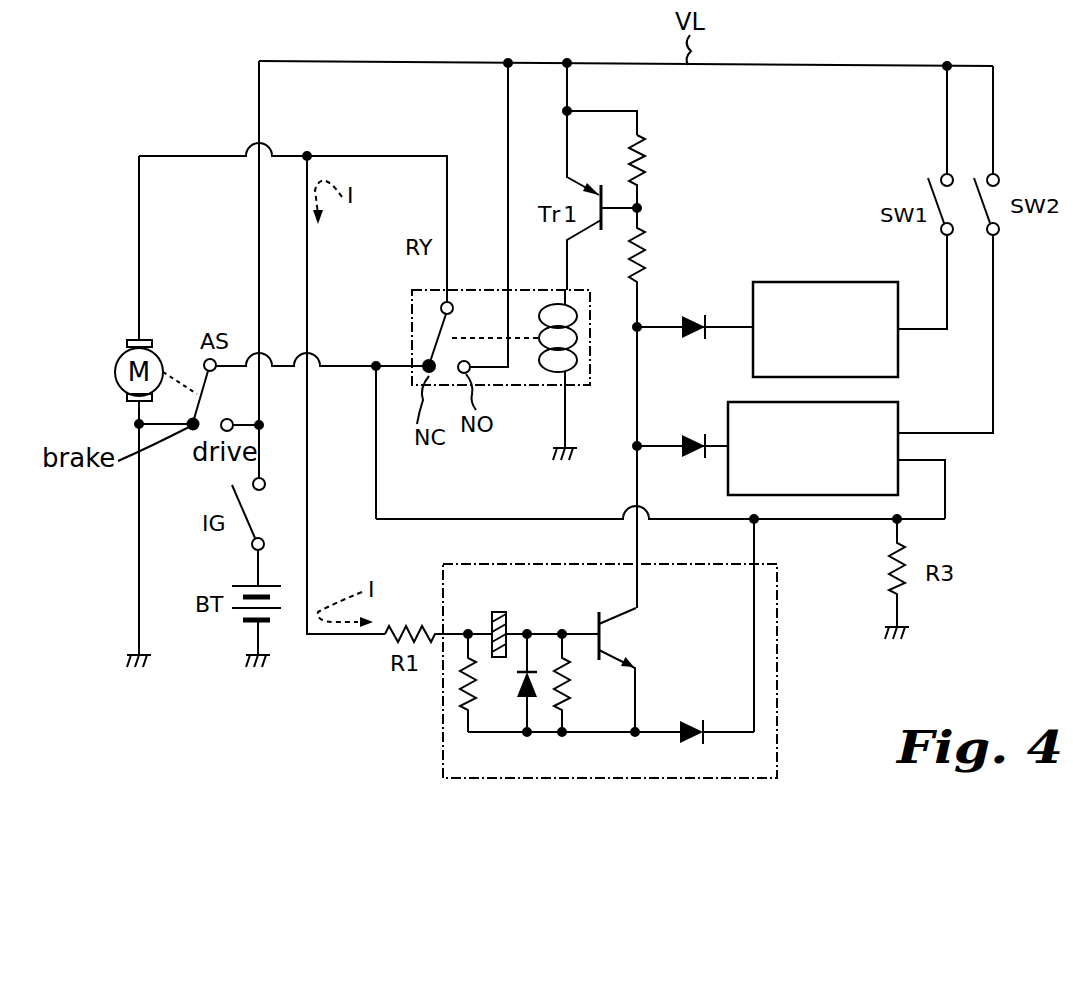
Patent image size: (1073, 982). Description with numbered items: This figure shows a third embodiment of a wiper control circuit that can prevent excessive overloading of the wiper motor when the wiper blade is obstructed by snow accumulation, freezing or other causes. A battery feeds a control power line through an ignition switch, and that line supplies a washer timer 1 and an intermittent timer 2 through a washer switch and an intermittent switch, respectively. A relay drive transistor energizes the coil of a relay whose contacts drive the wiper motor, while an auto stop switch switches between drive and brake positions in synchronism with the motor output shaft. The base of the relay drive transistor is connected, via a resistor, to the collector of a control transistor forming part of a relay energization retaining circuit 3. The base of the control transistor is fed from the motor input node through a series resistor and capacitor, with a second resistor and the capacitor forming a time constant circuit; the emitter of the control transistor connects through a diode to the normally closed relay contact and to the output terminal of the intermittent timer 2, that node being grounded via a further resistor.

The washer timer 1 is at (822, 281).
The intermittent timer 2 is at (898, 425).
The relay energization retaining circuit 3 is at (777, 670).